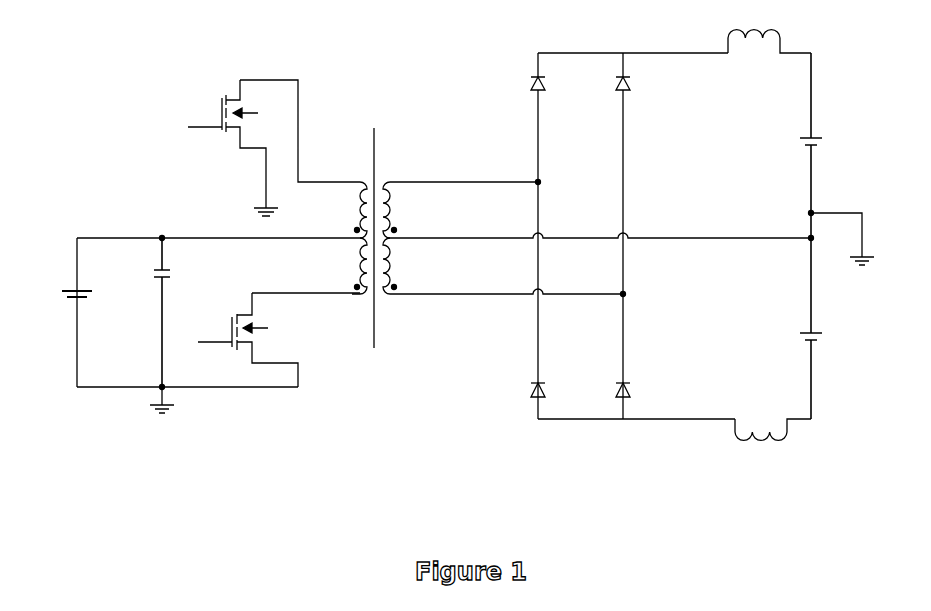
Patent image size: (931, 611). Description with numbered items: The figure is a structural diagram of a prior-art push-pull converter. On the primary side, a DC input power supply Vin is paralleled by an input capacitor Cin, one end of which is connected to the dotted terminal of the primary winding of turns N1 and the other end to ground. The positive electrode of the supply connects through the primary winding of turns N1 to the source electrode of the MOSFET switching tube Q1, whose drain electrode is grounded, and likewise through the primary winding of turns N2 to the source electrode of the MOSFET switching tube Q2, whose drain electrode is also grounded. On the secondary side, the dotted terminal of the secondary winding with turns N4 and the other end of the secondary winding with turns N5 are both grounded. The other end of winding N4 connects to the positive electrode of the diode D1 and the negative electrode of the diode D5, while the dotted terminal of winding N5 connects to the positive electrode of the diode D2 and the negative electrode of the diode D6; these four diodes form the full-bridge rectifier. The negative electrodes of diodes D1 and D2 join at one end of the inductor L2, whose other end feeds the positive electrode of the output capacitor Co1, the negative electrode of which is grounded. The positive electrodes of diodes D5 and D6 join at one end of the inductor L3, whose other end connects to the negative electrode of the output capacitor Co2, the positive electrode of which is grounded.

The DC input power supply Vin is at (52, 293).
The input capacitor Cin is at (176, 312).
The MOSFET switching tube Q1 is at (268, 148).
The MOSFET switching tube Q2 is at (279, 340).
The primary winding of turns N1 is at (336, 210).
The primary winding of turns N2 is at (336, 266).
The secondary winding with turns N4 is at (462, 209).
The secondary winding with turns N5 is at (504, 267).
The diode D1 is at (524, 236).
The diode D2 is at (638, 236).
The diode D5 is at (523, 393).
The diode D6 is at (640, 388).
The inductor L2 is at (769, 51).
The inductor L3 is at (773, 421).
The output capacitor Co1 is at (833, 145).
The output capacitor Co2 is at (834, 328).